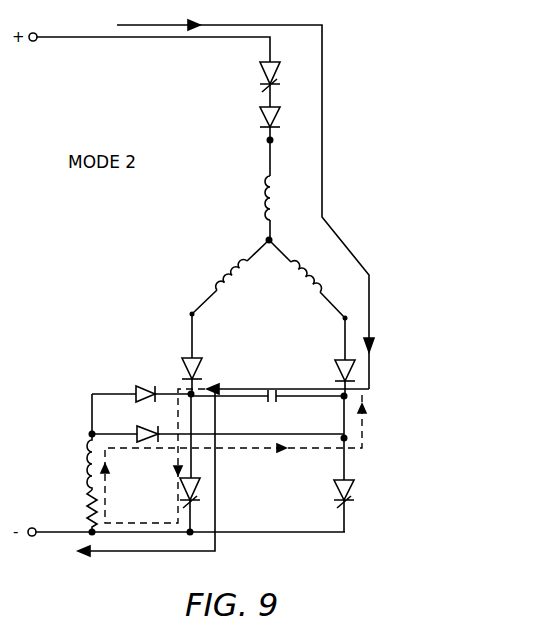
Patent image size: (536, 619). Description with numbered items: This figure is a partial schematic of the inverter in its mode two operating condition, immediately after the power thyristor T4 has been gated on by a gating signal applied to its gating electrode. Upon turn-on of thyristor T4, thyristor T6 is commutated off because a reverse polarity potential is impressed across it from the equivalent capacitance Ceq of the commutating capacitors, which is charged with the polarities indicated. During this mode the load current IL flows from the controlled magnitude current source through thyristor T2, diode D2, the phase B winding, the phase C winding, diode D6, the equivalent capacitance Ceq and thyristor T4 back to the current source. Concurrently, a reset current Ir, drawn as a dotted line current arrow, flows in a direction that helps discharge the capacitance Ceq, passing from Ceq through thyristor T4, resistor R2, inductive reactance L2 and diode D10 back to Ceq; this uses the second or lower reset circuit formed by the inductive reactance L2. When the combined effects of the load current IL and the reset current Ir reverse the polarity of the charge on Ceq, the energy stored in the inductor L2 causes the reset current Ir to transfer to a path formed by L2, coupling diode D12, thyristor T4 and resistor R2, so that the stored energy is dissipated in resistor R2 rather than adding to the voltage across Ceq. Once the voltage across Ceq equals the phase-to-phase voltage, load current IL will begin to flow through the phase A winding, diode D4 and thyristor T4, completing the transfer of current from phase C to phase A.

The thyristor T2 is at (259, 74).
The diode D2 is at (259, 118).
The diode D4 is at (202, 351).
The diode D6 is at (339, 370).
The equivalent capacitance Ceq is at (280, 391).
The coupling diode D12 is at (136, 376).
The diode D10 is at (136, 426).
The inductive reactance L2 is at (86, 474).
The resistor R2 is at (88, 508).
The power thyristor T4 is at (178, 492).
The thyristor T6 is at (334, 492).
The load current IL is at (181, 25).
The reset current Ir is at (276, 454).